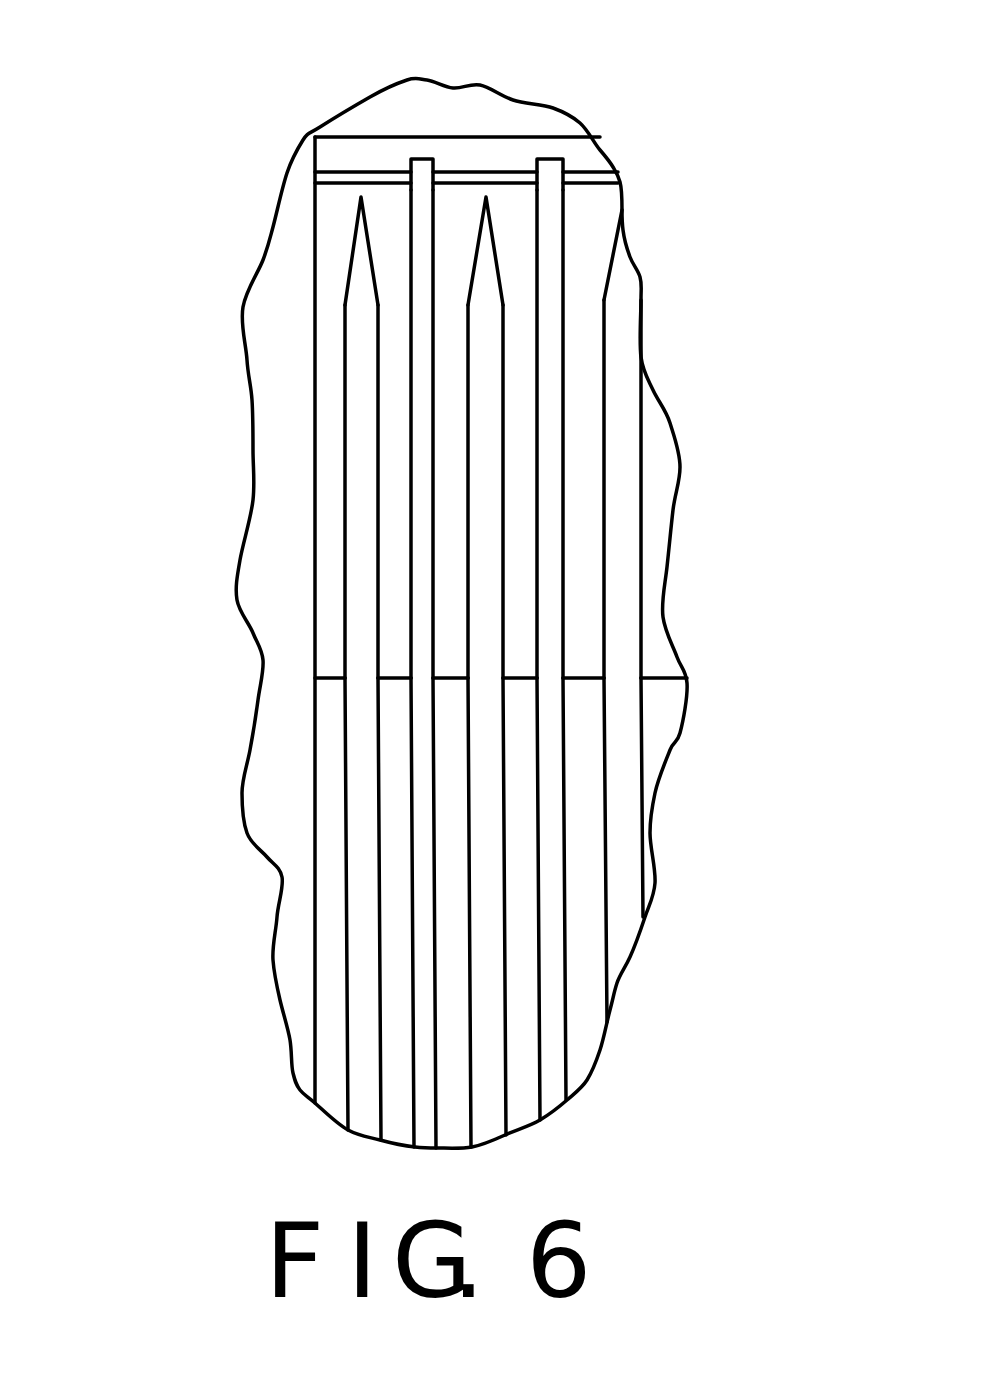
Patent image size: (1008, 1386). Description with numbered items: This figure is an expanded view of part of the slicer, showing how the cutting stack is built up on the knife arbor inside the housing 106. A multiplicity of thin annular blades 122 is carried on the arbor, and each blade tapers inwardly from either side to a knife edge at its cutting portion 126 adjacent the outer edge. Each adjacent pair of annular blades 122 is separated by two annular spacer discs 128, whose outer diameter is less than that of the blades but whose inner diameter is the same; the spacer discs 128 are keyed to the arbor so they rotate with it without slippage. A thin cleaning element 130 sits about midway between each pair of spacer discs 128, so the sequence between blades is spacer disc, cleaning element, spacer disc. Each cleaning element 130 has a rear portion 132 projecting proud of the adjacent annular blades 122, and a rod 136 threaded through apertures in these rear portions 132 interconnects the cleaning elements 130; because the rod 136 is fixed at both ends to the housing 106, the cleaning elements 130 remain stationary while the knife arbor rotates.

The housing 106 is at (300, 1028).
The annular blades 122 is at (353, 492).
The cutting portion 126 is at (357, 288).
The annular spacer discs 128 is at (393, 773).
The cleaning element 130 is at (420, 565).
The rear portion 132 is at (425, 170).
The rod 136 is at (358, 170).